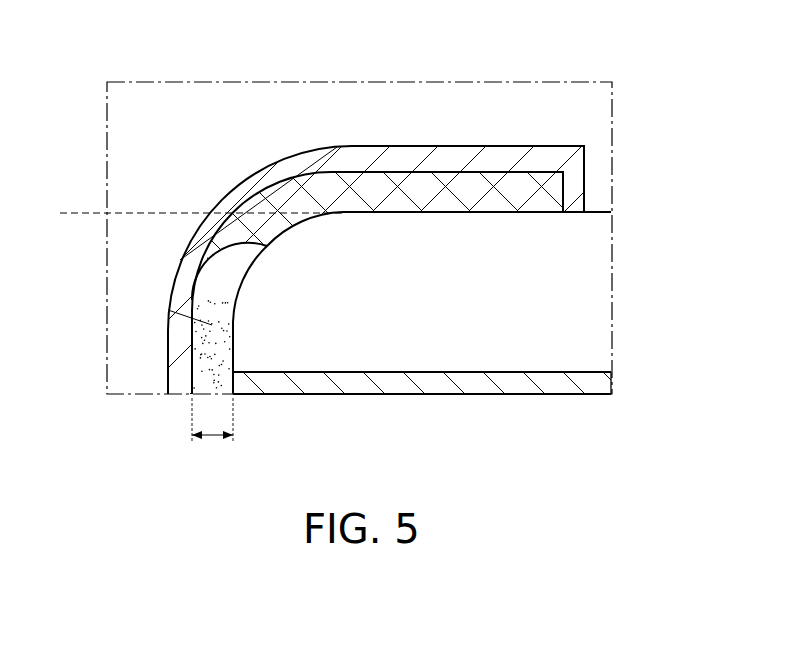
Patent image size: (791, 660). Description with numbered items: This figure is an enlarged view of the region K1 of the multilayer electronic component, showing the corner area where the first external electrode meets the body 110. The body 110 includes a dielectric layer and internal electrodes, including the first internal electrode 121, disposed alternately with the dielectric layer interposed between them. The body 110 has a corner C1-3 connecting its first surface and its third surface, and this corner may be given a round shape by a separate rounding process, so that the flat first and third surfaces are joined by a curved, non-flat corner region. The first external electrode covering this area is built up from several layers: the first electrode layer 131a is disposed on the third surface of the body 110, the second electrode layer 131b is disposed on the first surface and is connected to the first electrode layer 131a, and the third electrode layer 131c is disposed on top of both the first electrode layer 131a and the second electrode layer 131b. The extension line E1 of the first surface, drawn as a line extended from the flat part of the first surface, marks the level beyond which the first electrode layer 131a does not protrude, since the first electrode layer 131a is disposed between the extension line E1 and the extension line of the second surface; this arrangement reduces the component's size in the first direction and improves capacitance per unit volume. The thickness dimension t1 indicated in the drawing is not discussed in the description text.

The body 110 is at (597, 213).
The first internal electrode 121 is at (587, 383).
The 1-1-th electrode layer 131a is at (210, 325).
The 1-2-th electrode layer 131b is at (252, 230).
The 1-3-th electrode layer 131c is at (285, 173).
The 1-3-th corner C1-3 is at (286, 226).
The extension line of the first surface E1 is at (188, 215).
The region K1 is at (372, 486).
The thickness t1' t1 is at (212, 433).